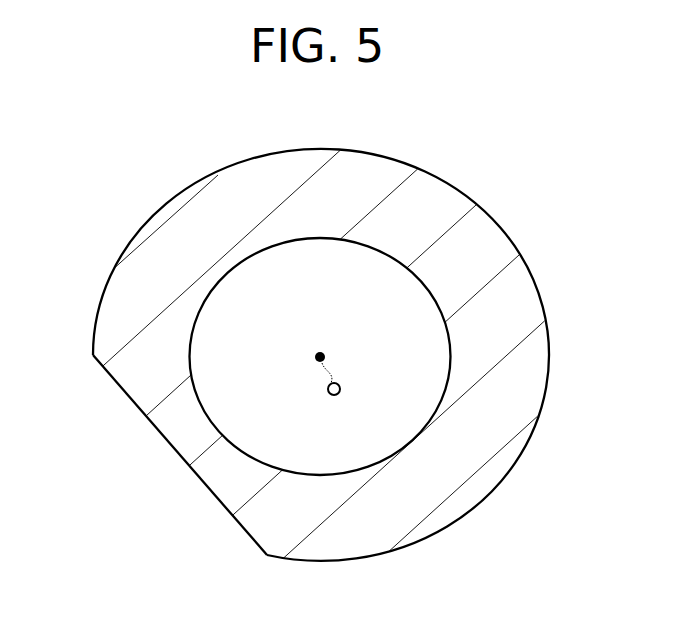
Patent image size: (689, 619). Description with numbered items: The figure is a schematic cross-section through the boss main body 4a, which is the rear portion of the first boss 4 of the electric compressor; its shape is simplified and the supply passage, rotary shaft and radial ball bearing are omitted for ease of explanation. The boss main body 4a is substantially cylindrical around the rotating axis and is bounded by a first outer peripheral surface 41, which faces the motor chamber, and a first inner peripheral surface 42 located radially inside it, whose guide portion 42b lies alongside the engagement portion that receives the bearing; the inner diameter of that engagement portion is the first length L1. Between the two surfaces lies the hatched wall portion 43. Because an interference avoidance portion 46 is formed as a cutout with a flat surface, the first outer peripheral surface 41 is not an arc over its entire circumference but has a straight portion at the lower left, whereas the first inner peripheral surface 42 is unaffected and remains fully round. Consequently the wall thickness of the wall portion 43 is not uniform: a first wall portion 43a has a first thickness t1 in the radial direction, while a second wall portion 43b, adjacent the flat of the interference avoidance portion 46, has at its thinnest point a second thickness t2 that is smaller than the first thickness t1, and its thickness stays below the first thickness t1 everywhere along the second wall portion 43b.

The first boss 4 is at (320, 355).
The boss main body 4a is at (455, 522).
The first outer peripheral surface 41 is at (133, 240).
The first inner peripheral surface 42 is at (320, 356).
The guide portion 42b is at (214, 301).
The wall portion 43 is at (373, 188).
The first wall portion 43a is at (273, 198).
The second wall portion 43b is at (221, 463).
The interference avoidance portion 46 is at (128, 396).
The first thickness t1 is at (268, 298).
The second thickness t2 is at (238, 407).
The first length L1 is at (320, 238).